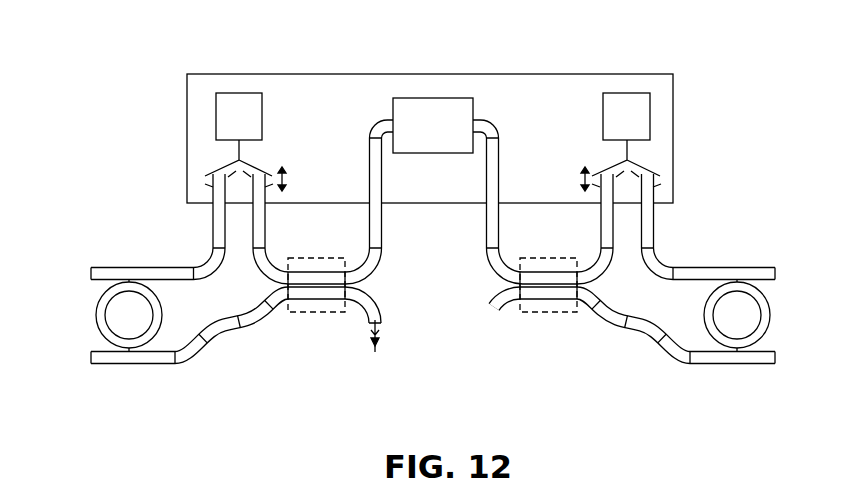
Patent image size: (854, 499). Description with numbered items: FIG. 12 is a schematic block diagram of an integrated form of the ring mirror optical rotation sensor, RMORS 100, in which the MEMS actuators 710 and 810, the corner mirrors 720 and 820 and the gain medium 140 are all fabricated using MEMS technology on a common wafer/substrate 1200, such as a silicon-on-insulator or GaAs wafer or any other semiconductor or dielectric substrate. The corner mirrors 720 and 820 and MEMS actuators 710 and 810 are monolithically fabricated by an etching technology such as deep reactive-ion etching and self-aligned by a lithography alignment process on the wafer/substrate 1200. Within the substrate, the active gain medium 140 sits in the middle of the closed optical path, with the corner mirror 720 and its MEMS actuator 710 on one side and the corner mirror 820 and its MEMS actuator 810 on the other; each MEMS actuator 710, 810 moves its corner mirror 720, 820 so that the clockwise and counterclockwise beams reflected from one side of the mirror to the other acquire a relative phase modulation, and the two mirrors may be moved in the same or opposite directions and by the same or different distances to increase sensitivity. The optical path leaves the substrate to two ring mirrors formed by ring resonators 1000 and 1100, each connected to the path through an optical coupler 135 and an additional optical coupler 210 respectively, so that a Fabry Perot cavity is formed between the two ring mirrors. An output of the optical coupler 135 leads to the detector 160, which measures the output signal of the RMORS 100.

The RMORS 100 is at (666, 34).
The wafer/substrate 1200 is at (555, 73).
The MEMS actuator 710 is at (263, 113).
The corner mirror 720 is at (253, 160).
The active gain medium 140 is at (475, 110).
The MEMS actuator 810 is at (603, 113).
The corner mirror 820 is at (614, 160).
The ring resonator 1000 is at (97, 321).
The ring resonator 1100 is at (771, 321).
The optical coupler 135 is at (308, 315).
The additional optical coupler 210 is at (539, 315).
The detector 160 is at (354, 357).